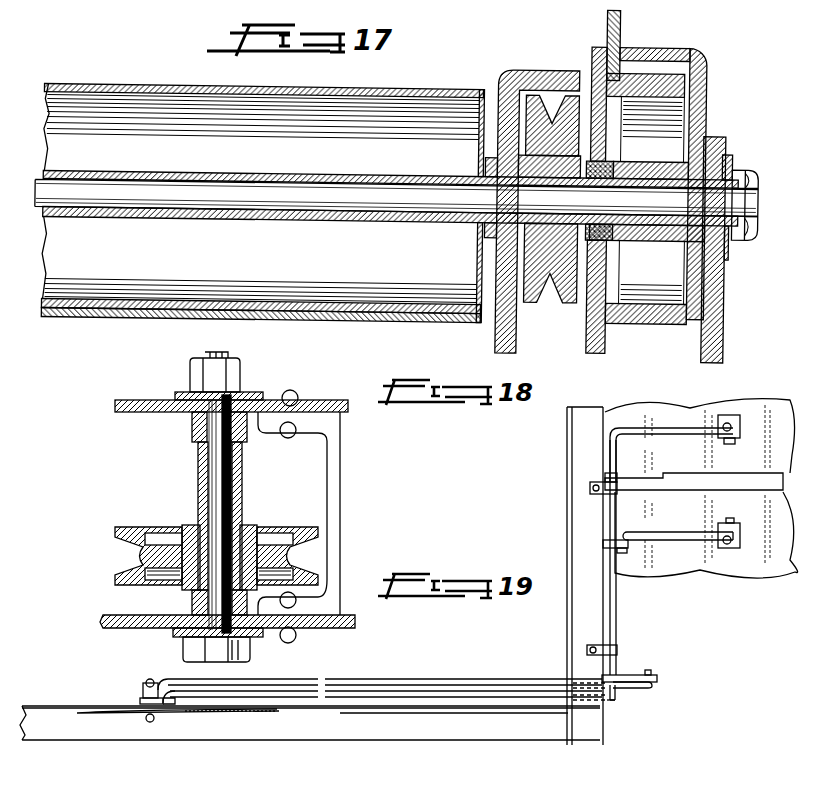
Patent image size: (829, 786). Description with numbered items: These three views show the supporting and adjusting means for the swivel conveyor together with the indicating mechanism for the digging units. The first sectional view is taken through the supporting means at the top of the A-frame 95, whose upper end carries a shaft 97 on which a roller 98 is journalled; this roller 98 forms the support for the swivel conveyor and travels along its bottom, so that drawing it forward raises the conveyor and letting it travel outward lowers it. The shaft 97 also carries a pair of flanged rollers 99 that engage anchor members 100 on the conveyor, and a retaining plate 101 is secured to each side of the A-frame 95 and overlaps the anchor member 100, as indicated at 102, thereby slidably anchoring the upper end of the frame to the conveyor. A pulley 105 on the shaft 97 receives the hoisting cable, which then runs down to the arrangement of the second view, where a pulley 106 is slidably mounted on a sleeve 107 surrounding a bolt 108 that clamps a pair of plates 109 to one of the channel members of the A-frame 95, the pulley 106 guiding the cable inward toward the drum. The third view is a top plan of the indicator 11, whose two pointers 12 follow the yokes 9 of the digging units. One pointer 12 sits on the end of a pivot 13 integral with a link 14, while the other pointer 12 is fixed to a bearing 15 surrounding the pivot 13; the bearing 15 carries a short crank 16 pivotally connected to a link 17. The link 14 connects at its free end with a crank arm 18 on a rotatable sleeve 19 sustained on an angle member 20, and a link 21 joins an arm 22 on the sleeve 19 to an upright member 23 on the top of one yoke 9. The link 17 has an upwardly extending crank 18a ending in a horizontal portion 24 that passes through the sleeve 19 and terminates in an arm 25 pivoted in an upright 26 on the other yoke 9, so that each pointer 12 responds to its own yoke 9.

In FIG. 19, the yoke 9 is at (766, 410).
In FIG. 19, the indicator 11 is at (270, 706).
In FIG. 19, the pointer 12 is at (151, 720).
In FIG. 19, the pivot 13 is at (146, 682).
In FIG. 19, the link 14 is at (428, 682).
In FIG. 19, the bearing 15 is at (143, 691).
In FIG. 19, the short crank 16 is at (172, 691).
In FIG. 19, the link 17 is at (422, 698).
In FIG. 19, the crank arm 18 is at (627, 675).
In FIG. 19, the upwardly extending crank 18a is at (613, 702).
In FIG. 19, the rotatable sleeve 19 is at (618, 607).
In FIG. 19, the angle member 20 is at (592, 616).
In FIG. 19, the link 21 is at (700, 538).
In FIG. 19, the arm 22 is at (603, 546).
In FIG. 19, the upright member 23 is at (735, 549).
In FIG. 19, the horizontal portion 24 is at (608, 447).
In FIG. 19, the arm 25 is at (657, 433).
In FIG. 19, the upright 26 is at (740, 422).
In FIG. 17, the A-frame 95 is at (722, 284).
In FIG. 18, the A-frame 95 is at (333, 478).
In FIG. 17, the shaft 97 is at (88, 217).
In FIG. 17, the roller 98 is at (121, 86).
In FIG. 17, the flanged roller 99 is at (692, 110).
In FIG. 17, the anchor member 100 is at (604, 22).
In FIG. 17, the retaining plate 101 is at (707, 82).
In FIG. 17, the overlap 102 is at (652, 50).
In FIG. 17, the pulley 105 is at (548, 125).
In FIG. 18, the pulley 106 is at (155, 540).
In FIG. 18, the sleeve 107 is at (240, 478).
In FIG. 18, the bolt 108 is at (236, 504).
In FIG. 18, the plate 109 is at (274, 400).